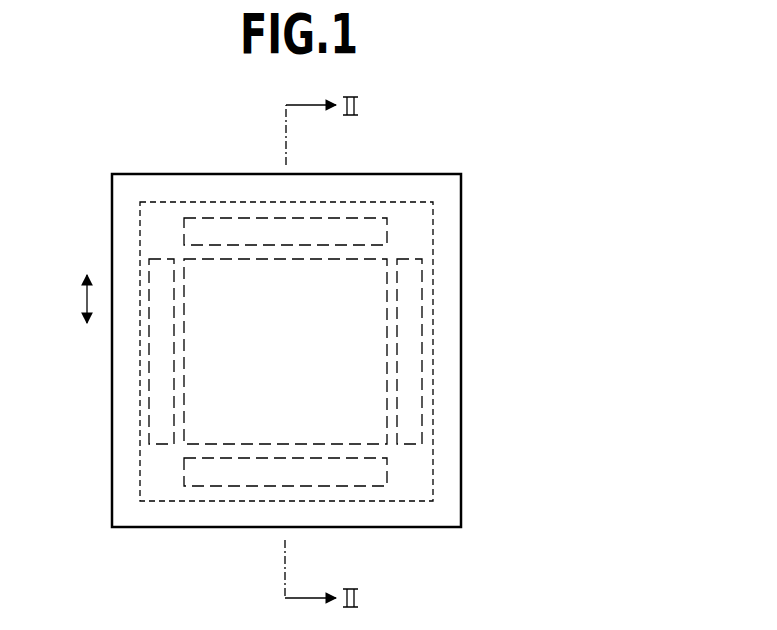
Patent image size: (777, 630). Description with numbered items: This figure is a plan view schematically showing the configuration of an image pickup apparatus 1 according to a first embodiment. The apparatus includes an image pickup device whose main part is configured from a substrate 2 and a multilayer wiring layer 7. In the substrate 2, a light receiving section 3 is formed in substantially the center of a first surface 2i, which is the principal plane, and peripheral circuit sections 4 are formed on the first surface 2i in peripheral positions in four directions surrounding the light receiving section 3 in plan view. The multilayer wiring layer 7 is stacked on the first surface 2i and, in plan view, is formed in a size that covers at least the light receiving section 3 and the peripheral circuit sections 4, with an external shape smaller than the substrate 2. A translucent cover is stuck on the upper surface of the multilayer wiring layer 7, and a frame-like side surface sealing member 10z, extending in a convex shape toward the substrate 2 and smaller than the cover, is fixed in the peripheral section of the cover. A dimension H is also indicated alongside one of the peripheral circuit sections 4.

The image pickup apparatus 1 is at (496, 190).
The substrate 2 is at (461, 430).
The first surface 2i is at (445, 255).
The side surface sealing member 10z is at (383, 190).
The light receiving section 3 is at (158, 353).
The peripheral circuit sections 4 is at (192, 233).
The multilayer wiring layer 7 is at (397, 498).
The height dimension H is at (75, 299).